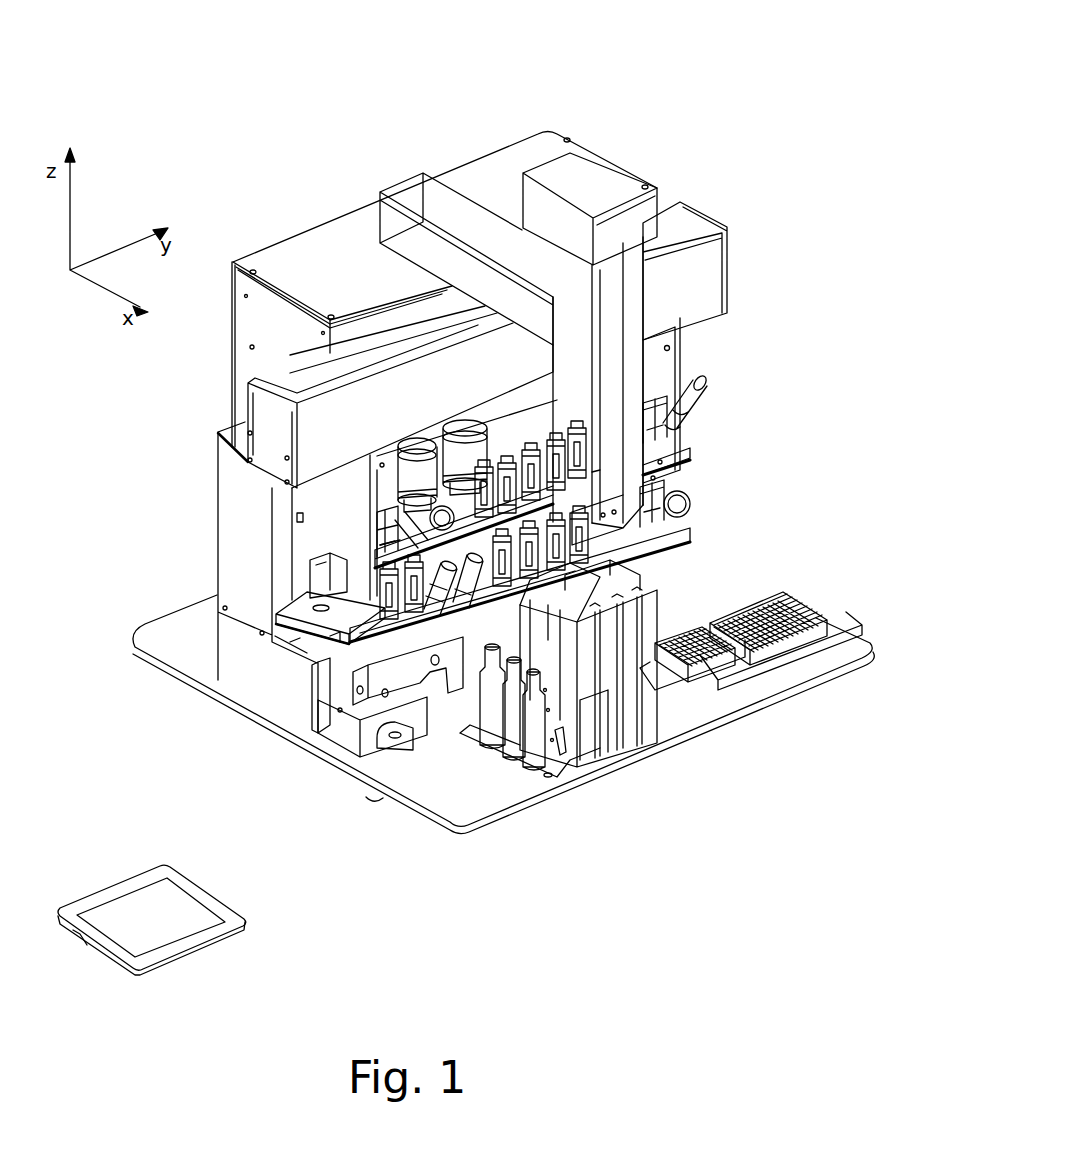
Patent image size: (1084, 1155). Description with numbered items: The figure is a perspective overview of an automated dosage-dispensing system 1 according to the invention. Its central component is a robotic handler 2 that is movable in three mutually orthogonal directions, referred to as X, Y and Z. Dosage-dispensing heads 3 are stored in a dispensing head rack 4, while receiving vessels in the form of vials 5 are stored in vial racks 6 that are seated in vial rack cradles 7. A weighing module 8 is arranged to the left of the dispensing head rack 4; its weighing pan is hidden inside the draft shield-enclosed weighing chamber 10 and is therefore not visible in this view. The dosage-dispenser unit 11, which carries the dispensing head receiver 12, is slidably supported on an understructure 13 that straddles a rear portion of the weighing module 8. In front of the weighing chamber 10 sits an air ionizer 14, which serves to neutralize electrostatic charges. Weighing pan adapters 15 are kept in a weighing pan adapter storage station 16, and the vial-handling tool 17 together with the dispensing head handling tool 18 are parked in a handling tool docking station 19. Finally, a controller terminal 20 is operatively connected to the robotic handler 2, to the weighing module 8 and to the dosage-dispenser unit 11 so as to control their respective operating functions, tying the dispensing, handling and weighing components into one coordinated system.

The automated dosage-dispensing system 1 is at (261, 138).
The robotic handler 2 is at (588, 178).
The dosage-dispensing heads 3 is at (690, 508).
The dispensing head rack 4 is at (658, 366).
The vials 5 is at (805, 606).
The vial racks 6 is at (797, 637).
The vial rack cradles 7 is at (790, 658).
The weighing module 8 is at (338, 722).
The weighing chamber 10 is at (340, 665).
The dosage-dispenser unit 11 is at (238, 585).
The dispensing head receiver 12 is at (312, 574).
The understructure 13 is at (287, 640).
The air ionizer 14 is at (398, 678).
The weighing pan adapters 15 is at (523, 700).
The weighing pan adapter storage station 16 is at (523, 780).
The vial-handling tool 17 is at (597, 733).
The dispensing head handling tool 18 is at (612, 603).
The handling tool docking station 19 is at (612, 643).
The controller terminal 20 is at (160, 930).